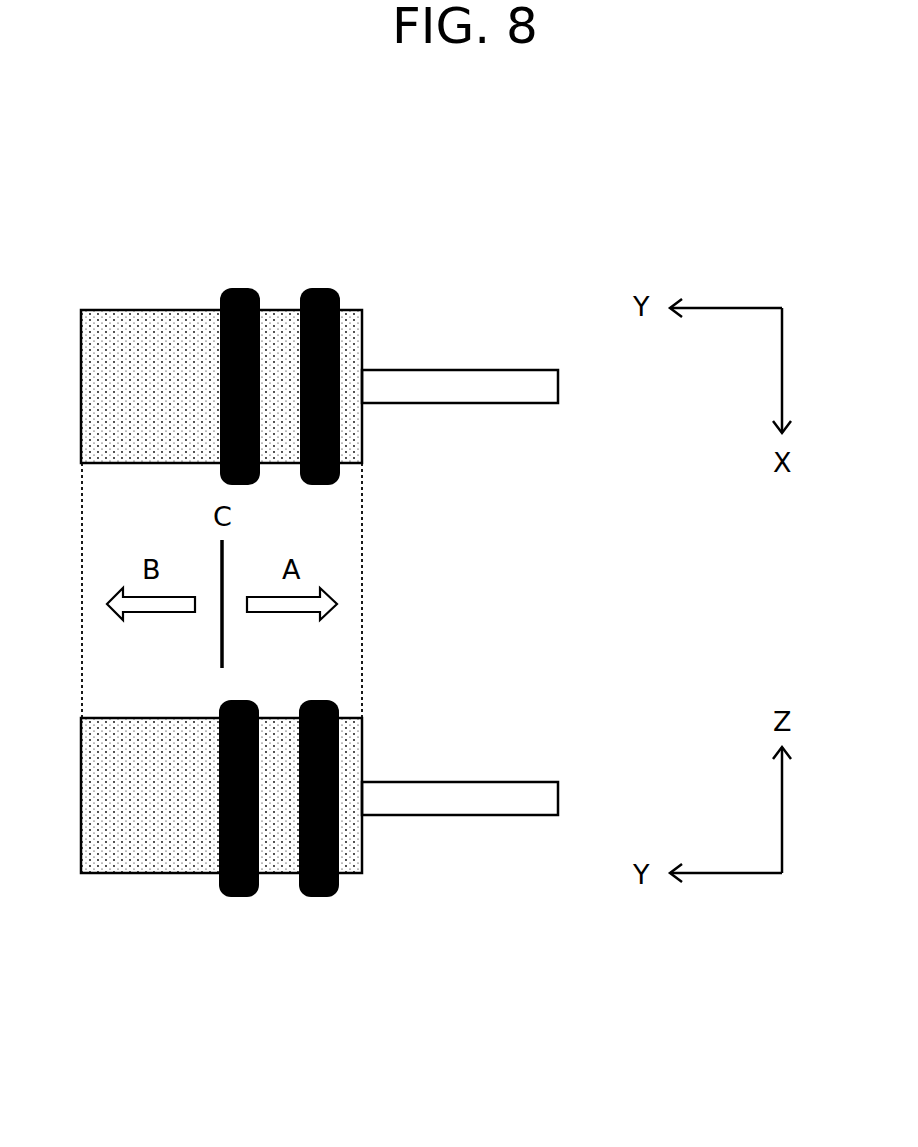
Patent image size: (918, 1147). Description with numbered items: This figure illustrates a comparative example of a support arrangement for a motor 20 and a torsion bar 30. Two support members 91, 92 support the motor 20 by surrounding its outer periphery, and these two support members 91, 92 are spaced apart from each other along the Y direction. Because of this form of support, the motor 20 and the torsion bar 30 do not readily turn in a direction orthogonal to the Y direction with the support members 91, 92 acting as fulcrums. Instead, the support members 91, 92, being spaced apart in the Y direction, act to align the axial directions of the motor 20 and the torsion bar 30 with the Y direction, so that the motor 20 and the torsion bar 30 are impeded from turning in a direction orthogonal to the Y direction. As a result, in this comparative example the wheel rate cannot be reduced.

The motor 20 is at (122, 310).
The torsion bar 30 is at (478, 370).
The support member 91 is at (242, 288).
The support member 92 is at (323, 288).